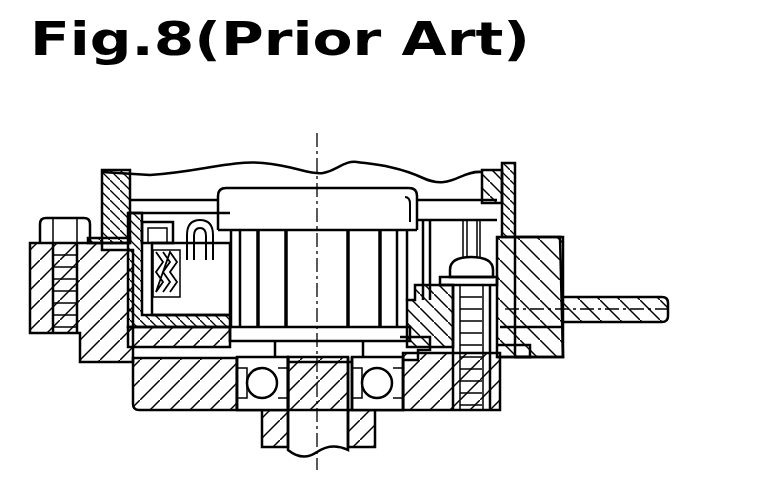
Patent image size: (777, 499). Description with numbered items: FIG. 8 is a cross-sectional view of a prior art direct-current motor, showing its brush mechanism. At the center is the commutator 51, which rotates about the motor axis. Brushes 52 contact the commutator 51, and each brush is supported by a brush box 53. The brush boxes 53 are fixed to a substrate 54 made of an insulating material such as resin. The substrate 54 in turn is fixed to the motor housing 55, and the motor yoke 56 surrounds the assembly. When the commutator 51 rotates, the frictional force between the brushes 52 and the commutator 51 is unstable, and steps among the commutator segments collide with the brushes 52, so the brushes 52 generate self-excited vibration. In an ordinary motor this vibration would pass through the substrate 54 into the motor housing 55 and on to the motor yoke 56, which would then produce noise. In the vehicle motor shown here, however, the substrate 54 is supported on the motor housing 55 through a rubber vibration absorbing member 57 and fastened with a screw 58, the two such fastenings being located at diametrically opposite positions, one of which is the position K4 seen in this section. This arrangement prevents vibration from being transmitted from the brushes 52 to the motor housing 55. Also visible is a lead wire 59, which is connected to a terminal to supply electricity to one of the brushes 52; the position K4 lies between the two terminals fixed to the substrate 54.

The commutator 51 is at (268, 250).
The brushes 52 is at (197, 240).
The brush boxes 53 is at (157, 222).
The substrate 54 is at (168, 337).
The motor housing 55 is at (223, 413).
The motor yoke 56 is at (105, 190).
The vibration absorbing member 57 is at (517, 352).
The screws 58 is at (468, 412).
The lead wire 59 is at (653, 317).
The position K4 is at (503, 270).